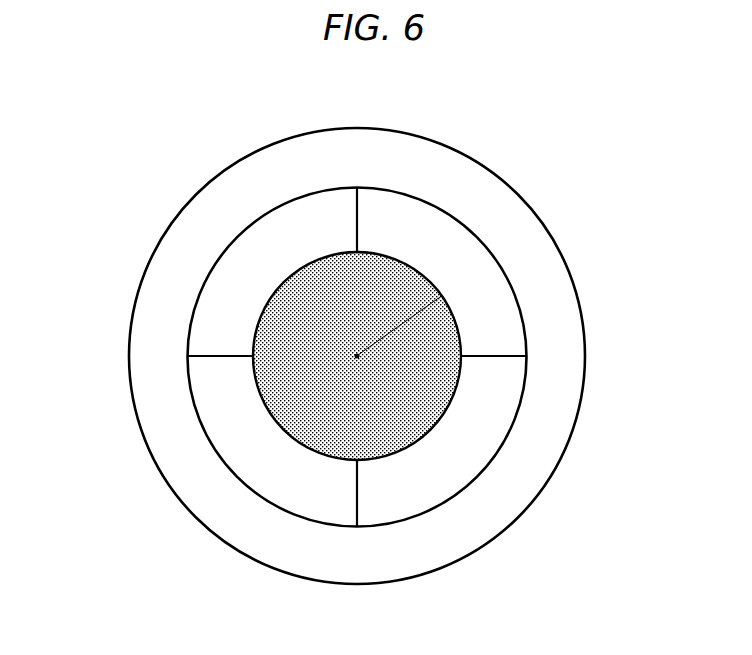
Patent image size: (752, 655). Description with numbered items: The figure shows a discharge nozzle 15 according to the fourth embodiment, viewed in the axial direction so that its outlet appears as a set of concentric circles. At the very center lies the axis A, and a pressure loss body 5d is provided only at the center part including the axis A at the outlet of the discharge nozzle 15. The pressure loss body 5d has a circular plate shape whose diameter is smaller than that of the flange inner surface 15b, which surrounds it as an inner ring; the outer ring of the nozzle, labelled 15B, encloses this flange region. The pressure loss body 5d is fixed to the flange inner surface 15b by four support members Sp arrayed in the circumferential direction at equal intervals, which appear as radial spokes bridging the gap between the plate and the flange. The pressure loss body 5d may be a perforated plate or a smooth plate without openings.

The discharge nozzle 15 is at (522, 200).
The outer core portion 15B is at (433, 165).
The flange inner surface 15b is at (205, 296).
The pressure loss body 5d is at (498, 393).
The support member Sp is at (357, 210).
The axis A is at (450, 295).